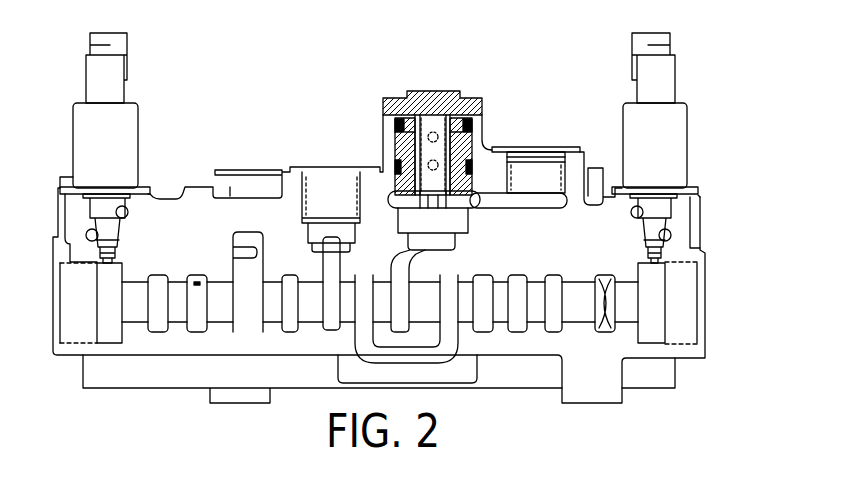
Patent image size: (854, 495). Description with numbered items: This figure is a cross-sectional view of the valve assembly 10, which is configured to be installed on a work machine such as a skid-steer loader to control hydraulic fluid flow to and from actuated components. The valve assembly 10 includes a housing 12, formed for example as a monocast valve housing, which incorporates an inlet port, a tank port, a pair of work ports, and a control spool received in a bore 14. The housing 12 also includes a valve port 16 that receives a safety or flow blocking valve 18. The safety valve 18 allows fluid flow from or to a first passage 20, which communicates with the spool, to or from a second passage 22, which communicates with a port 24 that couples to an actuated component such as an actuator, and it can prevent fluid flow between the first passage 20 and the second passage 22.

The valve assembly 10 is at (712, 90).
The housing 12 is at (191, 187).
The bore 14 is at (220, 305).
The valve port 16 is at (395, 145).
The safety valve 18 is at (375, 97).
The first passage 20 is at (403, 252).
The second passage 22 is at (513, 200).
The port 24 is at (563, 147).